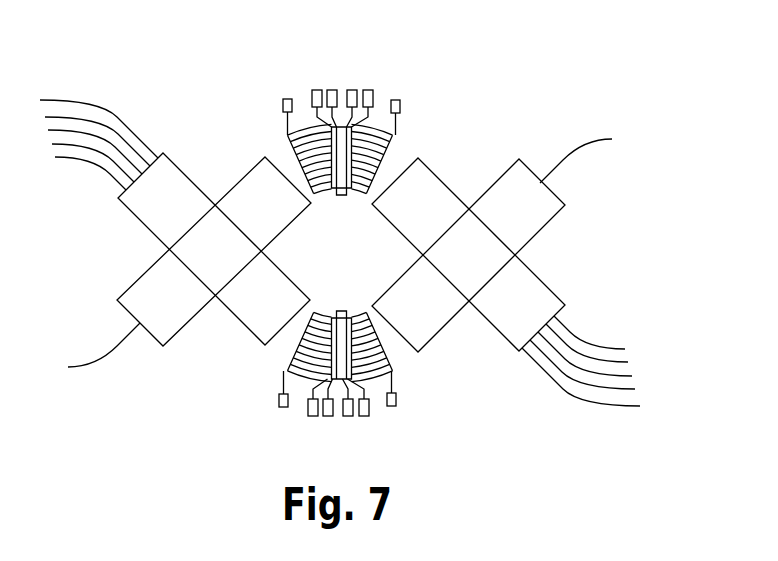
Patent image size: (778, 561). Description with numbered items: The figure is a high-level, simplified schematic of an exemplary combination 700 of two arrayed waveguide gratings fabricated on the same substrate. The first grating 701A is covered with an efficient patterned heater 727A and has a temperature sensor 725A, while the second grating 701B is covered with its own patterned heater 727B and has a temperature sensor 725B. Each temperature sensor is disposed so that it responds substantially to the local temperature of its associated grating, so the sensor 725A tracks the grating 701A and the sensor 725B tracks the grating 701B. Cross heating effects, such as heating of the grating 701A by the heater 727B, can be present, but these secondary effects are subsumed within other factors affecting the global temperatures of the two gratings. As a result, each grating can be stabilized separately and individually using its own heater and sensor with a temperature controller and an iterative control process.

The combination of two arrayed waveguide gratings 700 is at (340, 236).
The arrayed waveguide grating 701A is at (438, 147).
The arrayed waveguide grating 701B is at (252, 365).
The temperature sensor 725A is at (345, 60).
The temperature sensor 725B is at (338, 423).
The heater 727A is at (300, 104).
The heater 727B is at (267, 387).